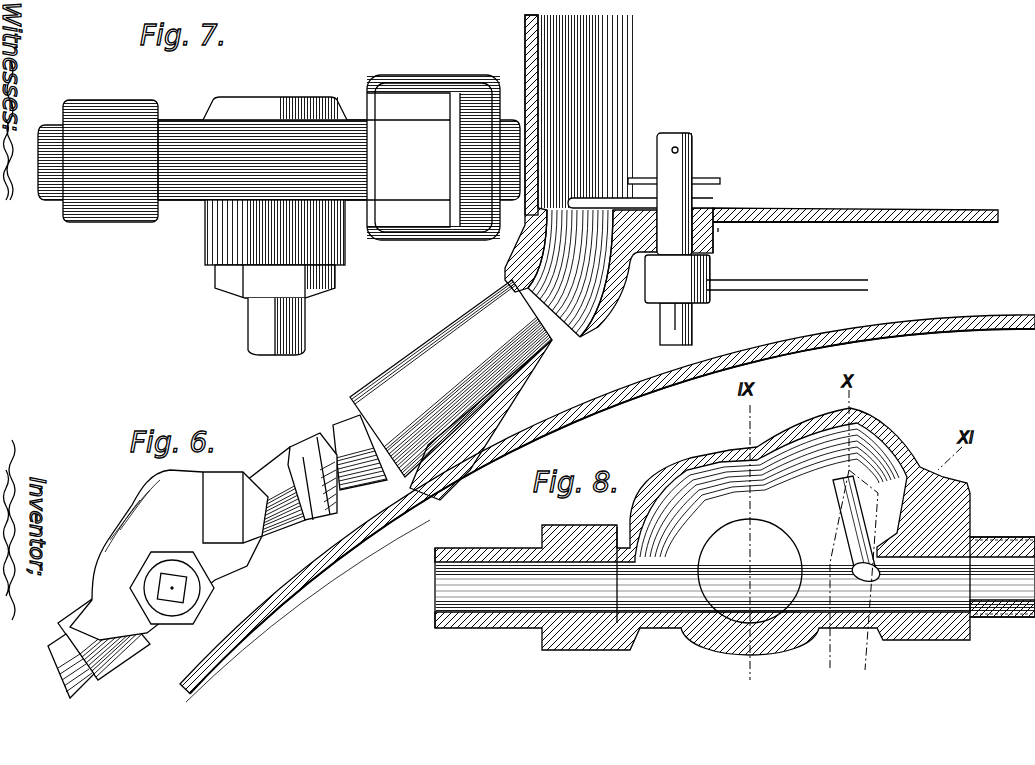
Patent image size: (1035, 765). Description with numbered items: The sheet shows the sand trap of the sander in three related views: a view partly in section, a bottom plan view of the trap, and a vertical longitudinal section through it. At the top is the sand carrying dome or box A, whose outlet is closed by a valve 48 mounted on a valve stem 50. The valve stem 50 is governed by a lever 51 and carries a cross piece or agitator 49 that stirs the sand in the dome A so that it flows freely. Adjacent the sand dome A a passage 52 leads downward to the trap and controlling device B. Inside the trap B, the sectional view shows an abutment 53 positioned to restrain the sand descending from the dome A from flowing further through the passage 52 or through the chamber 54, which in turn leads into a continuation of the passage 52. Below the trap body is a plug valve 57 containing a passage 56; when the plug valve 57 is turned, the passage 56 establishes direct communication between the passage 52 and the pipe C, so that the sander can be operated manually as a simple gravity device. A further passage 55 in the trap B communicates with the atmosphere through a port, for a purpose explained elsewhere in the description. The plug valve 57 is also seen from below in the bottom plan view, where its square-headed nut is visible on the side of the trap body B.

In FIG. 6, the valve 48 is at (710, 203).
In FIG. 6, the cross piece or agitator 49 is at (703, 178).
In FIG. 6, the valve stem 50 is at (692, 147).
In FIG. 6, the lever 51 is at (738, 283).
In FIG. 6, the passage 52 is at (600, 304).
In FIG. 8, the passage 52 is at (1000, 592).
In FIG. 8, the abutment 53 is at (820, 514).
In FIG. 8, the chamber 54 is at (705, 495).
In FIG. 8, the passage 55 is at (858, 575).
In FIG. 8, the passage 56 is at (713, 638).
In FIG. 7, the plug valve 57 is at (237, 305).
In FIG. 6, the plug valve 57 is at (177, 612).
In FIG. 8, the plug valve 57 is at (768, 624).
In FIG. 6, the sand carrying dome or box A is at (607, 405).
In FIG. 7, the trap and controlling device B is at (275, 92).
In FIG. 6, the trap and controlling device B is at (228, 487).
In FIG. 8, the pipe C is at (447, 594).